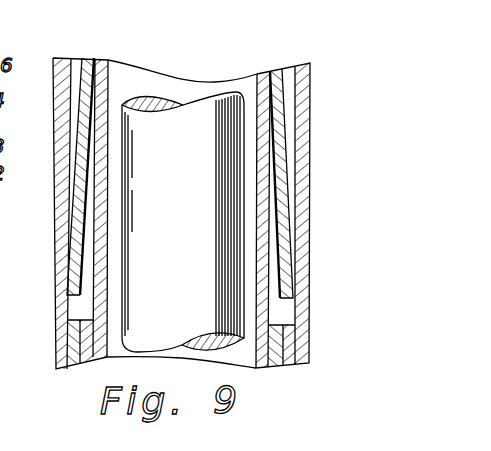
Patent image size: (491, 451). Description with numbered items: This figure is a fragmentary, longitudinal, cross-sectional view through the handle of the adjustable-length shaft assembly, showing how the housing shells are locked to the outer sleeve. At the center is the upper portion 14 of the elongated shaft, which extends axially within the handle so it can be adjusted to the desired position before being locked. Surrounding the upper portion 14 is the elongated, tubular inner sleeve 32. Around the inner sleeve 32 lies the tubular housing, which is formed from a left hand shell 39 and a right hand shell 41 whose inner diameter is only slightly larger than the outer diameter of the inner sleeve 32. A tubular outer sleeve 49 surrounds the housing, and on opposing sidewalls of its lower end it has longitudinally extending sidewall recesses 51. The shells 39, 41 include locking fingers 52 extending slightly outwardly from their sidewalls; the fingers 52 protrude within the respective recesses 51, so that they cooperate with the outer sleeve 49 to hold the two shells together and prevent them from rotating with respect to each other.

The upper portion of the shaft 14 is at (212, 110).
The inner sleeve 32 is at (244, 86).
The left hand shell 39 is at (90, 62).
The right hand shell 41 is at (283, 86).
The outer sleeve 49 is at (284, 366).
The sidewall recesses 51 is at (290, 123).
The locking fingers 52 is at (287, 238).